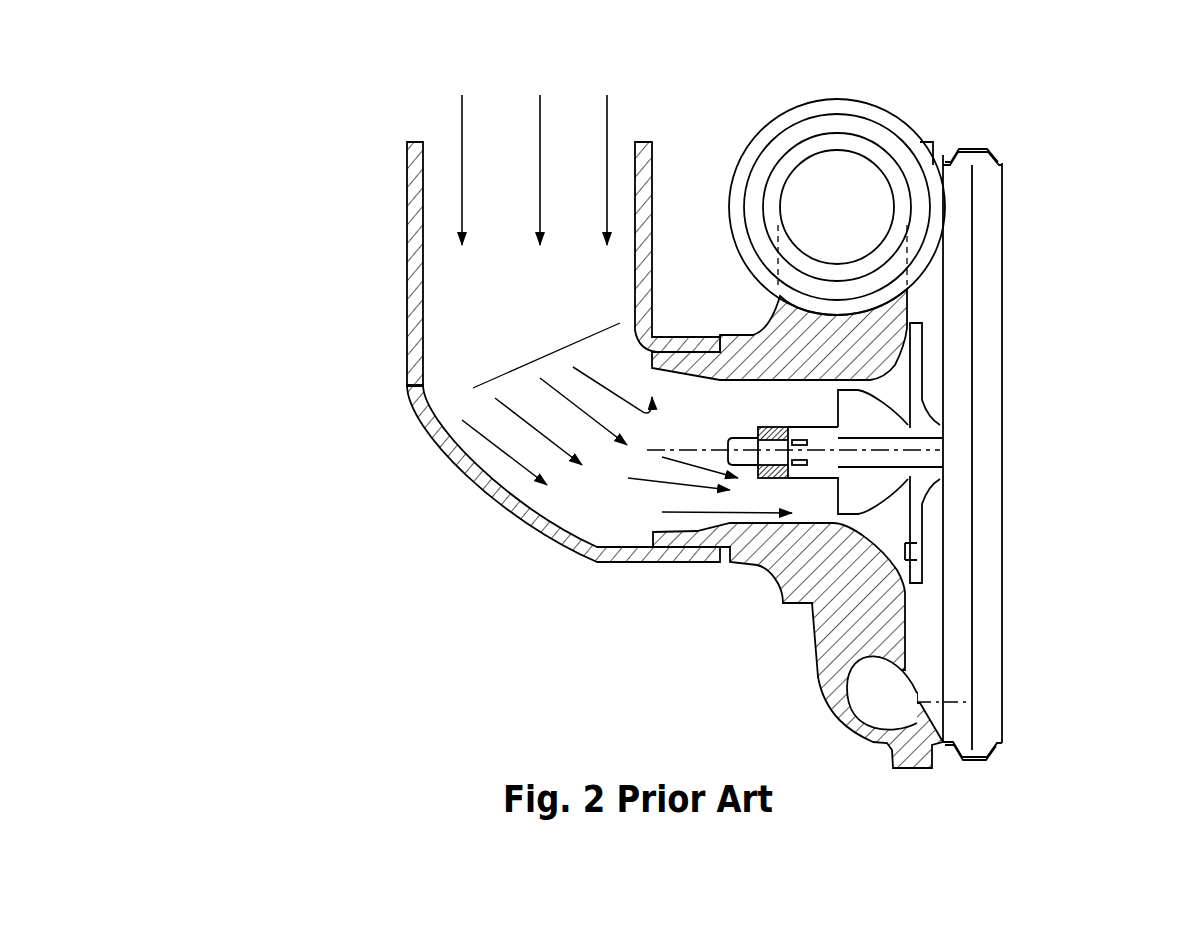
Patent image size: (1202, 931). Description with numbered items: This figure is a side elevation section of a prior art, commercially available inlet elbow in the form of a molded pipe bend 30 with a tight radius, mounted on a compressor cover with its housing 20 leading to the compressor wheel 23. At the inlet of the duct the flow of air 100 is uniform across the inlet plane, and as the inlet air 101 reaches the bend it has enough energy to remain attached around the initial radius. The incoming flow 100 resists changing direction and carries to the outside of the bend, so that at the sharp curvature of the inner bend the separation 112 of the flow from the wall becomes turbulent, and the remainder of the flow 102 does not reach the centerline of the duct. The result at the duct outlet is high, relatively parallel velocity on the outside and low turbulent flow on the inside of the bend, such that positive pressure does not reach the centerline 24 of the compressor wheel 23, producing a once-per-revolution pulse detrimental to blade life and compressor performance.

The flow of air 100 is at (528, 85).
The inlet air 101 is at (550, 357).
The molded pipe bend 30 is at (422, 425).
The remainder of the flow 102 is at (697, 469).
The compressor housing 20 is at (830, 590).
The separation of the flow 112 is at (683, 415).
The compressor wheel 23 is at (895, 418).
The centerline of the compressor wheel 24 is at (818, 450).